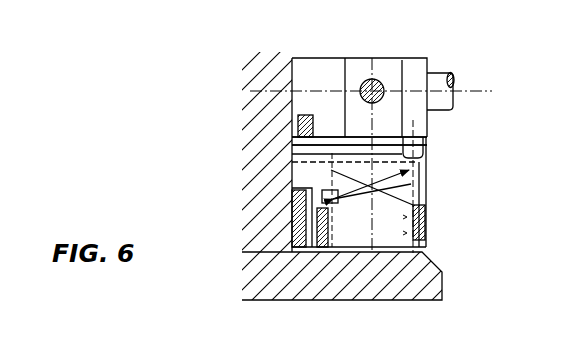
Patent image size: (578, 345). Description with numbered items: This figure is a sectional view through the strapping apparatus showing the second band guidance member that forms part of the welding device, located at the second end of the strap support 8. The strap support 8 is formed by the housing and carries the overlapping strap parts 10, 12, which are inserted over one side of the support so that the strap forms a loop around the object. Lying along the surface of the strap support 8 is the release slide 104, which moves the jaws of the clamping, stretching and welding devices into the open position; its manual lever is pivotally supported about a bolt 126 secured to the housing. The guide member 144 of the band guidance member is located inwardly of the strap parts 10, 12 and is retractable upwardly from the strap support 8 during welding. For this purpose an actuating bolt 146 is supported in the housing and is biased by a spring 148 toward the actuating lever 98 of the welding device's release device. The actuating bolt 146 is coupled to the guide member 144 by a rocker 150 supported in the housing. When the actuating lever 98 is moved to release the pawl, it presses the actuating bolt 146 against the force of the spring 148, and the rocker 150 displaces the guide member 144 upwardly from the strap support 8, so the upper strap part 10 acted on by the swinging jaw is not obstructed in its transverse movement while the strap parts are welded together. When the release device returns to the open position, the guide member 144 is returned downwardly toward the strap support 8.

The strap support 8 is at (342, 282).
The upper strap part 10 is at (390, 254).
The strap part 12 is at (359, 240).
The actuating lever 98 is at (440, 84).
The release slide 104 is at (298, 230).
The bolt 126 is at (447, 102).
The guide member 144 is at (292, 248).
The actuating bolt 146 is at (425, 148).
The spring 148 is at (349, 200).
The rocker 150 is at (415, 192).